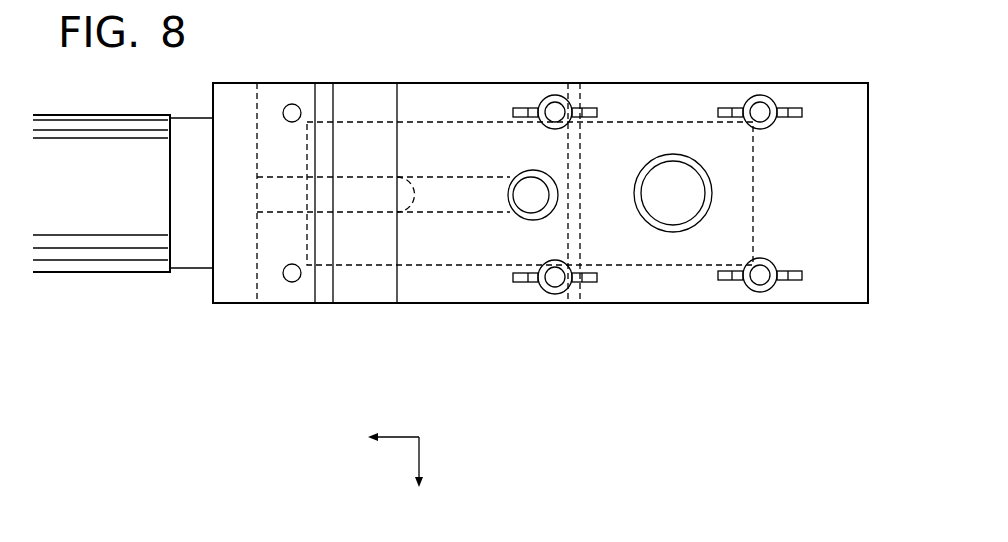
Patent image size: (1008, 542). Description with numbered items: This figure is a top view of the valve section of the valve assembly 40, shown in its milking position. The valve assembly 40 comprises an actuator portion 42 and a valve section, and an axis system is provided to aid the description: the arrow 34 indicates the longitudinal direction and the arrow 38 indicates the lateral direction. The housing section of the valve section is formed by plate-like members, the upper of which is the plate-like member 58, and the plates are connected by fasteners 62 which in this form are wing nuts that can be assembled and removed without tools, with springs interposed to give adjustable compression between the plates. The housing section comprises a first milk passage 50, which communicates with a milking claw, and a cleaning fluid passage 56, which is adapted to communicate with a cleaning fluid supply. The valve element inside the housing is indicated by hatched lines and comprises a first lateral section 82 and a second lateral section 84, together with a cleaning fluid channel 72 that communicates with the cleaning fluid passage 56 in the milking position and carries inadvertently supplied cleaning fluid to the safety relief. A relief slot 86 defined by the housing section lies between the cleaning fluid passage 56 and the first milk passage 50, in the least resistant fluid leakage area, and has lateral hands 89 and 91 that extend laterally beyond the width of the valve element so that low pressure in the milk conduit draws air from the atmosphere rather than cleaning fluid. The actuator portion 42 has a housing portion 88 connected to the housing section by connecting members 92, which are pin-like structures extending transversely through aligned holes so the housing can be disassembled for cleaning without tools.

The housing portion 88 is at (97, 133).
The actuator portion 42 is at (111, 292).
The plate-like member 58 is at (823, 107).
The first lateral section 82 is at (464, 128).
The cleaning fluid channel 72 is at (437, 183).
The lateral hand 89 is at (582, 95).
The connecting member 92 is at (291, 104).
The cleaning fluid passage 56 is at (558, 190).
The first milk passage 50 is at (688, 224).
The fastener 62 is at (553, 110).
The relief slot 86 is at (577, 222).
The second lateral section 84 is at (623, 260).
The lateral hand 91 is at (577, 290).
The valve assembly 40 is at (332, 340).
The arrow 34 is at (403, 437).
The arrow 38 is at (419, 460).